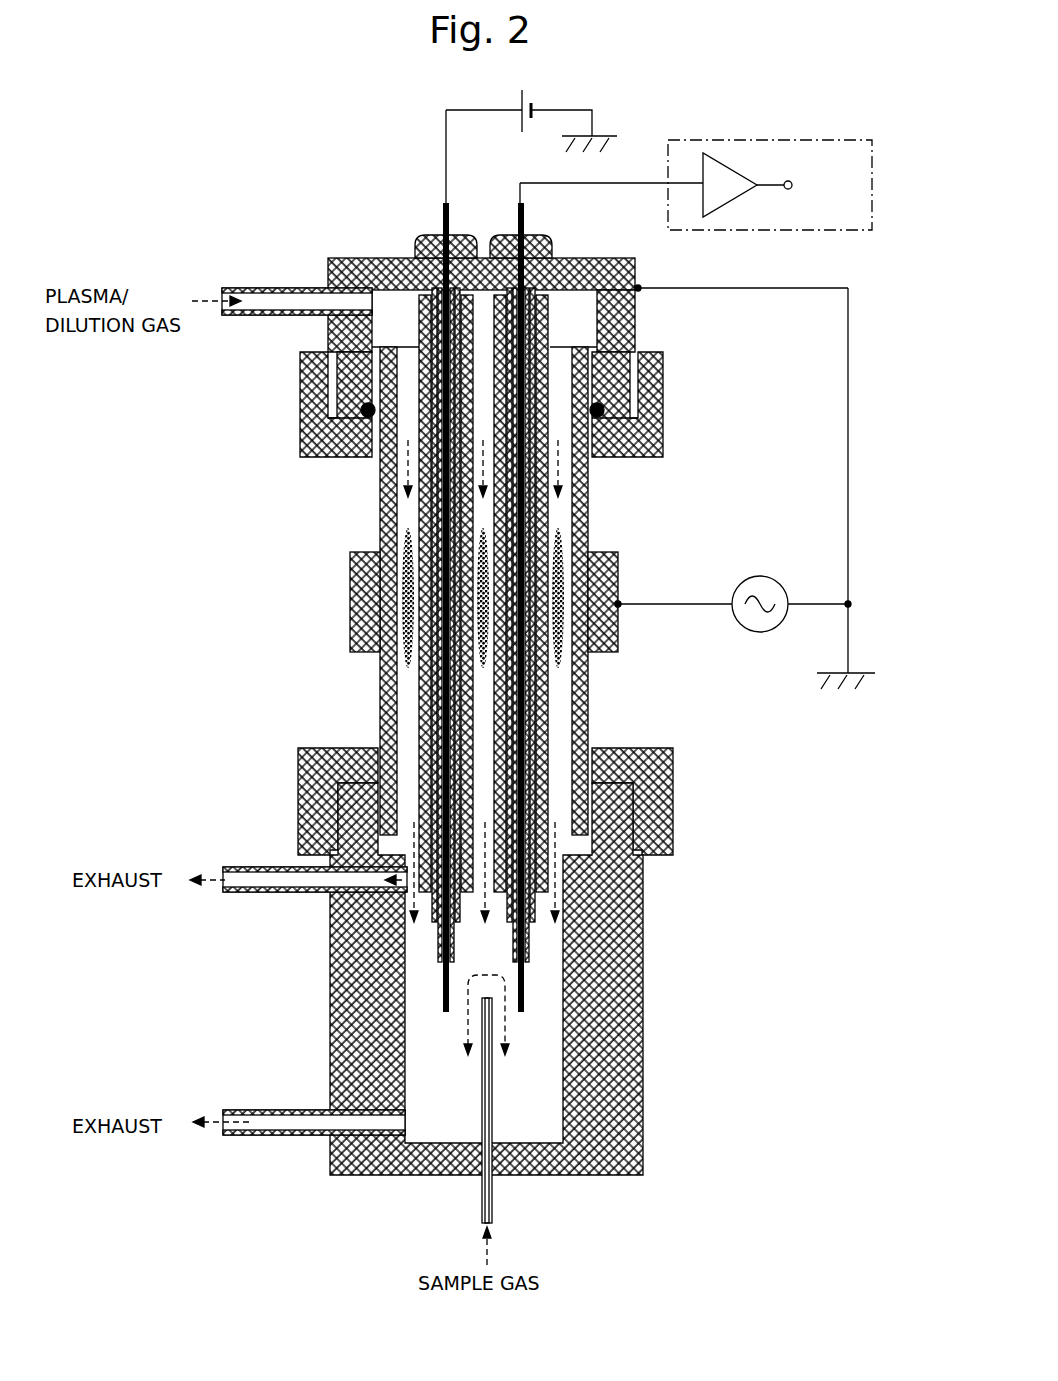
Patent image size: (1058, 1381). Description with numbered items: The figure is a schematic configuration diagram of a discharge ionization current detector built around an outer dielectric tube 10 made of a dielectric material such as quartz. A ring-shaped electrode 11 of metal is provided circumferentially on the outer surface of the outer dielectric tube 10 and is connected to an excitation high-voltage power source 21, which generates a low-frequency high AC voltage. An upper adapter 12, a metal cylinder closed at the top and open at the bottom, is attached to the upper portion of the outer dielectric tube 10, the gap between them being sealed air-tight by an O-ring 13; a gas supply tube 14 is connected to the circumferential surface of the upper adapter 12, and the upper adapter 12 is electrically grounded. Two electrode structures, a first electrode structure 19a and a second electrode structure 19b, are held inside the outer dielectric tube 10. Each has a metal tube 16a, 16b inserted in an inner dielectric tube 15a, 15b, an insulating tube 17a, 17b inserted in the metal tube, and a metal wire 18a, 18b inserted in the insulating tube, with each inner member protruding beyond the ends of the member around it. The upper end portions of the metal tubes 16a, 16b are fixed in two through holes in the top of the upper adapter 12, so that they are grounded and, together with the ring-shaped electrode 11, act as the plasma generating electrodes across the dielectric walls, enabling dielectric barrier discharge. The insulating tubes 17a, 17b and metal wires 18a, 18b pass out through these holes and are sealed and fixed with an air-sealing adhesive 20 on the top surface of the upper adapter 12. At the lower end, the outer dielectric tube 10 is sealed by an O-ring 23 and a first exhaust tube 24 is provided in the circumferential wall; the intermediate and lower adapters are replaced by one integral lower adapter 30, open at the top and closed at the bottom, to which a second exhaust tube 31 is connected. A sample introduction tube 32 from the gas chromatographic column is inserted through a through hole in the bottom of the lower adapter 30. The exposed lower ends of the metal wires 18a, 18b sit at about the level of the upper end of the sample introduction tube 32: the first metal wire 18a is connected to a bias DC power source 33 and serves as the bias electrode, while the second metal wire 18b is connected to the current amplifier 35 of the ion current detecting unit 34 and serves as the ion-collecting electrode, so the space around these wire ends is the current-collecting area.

The outer dielectric tube 10 is at (380, 509).
The ring-shaped electrode 11 is at (350, 605).
The upper adapter 12 is at (362, 258).
The O-ring 13 is at (598, 418).
The gas supply tube 14 is at (283, 288).
The inner dielectric tube 15a is at (425, 890).
The inner dielectric tube 15b is at (542, 890).
The metal tube 16a is at (437, 920).
The metal tube 16b is at (530, 920).
The insulating tube 17a is at (444, 952).
The insulating tube 17b is at (523, 952).
The metal wire 18a is at (449, 985).
The metal wire 18b is at (518, 985).
The first electrode structure 19a is at (329, 625).
The second electrode structure 19b is at (636, 625).
The air-sealing adhesive 20 is at (425, 233).
The excitation high-voltage power source 21 is at (766, 577).
The O-ring 23 is at (603, 784).
The first exhaust tube 24 is at (268, 866).
The lower adapter 30 is at (643, 1113).
The second exhaust tube 31 is at (292, 1137).
The sample introduction tube 32 is at (481, 1125).
The bias DC power source 33 is at (537, 104).
The ion current detecting unit 34 is at (699, 206).
The current amplifier 35 is at (731, 202).